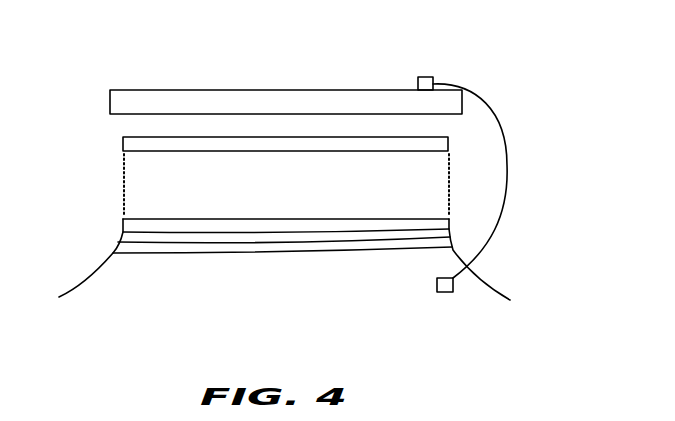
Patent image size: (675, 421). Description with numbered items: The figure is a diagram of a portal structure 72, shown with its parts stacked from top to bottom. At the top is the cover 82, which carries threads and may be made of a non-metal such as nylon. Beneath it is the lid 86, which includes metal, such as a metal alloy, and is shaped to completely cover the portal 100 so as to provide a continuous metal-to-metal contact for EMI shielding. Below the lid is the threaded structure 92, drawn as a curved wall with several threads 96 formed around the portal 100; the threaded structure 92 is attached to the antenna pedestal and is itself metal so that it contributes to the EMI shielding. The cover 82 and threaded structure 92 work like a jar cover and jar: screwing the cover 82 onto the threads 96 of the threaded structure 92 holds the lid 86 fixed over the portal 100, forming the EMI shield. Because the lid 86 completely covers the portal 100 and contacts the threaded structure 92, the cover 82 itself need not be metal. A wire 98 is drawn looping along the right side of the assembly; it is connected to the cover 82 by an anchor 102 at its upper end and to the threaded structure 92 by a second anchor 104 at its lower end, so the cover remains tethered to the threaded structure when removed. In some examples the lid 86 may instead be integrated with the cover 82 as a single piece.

The portal structure 72 is at (144, 66).
The cover 82 is at (110, 100).
The lid 86 is at (123, 142).
The threaded structure 92 is at (107, 258).
The threads 96 is at (270, 233).
The wire 98 is at (508, 176).
The portal 100 is at (290, 206).
The anchor 102 is at (418, 78).
The anchor 104 is at (445, 292).